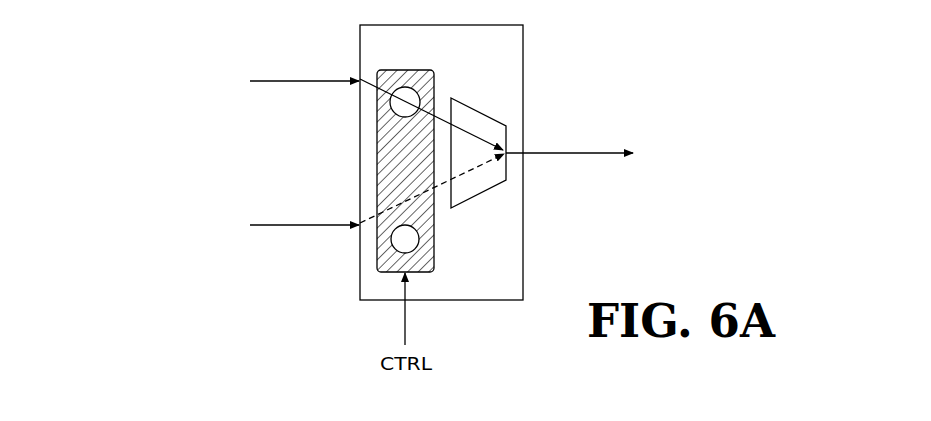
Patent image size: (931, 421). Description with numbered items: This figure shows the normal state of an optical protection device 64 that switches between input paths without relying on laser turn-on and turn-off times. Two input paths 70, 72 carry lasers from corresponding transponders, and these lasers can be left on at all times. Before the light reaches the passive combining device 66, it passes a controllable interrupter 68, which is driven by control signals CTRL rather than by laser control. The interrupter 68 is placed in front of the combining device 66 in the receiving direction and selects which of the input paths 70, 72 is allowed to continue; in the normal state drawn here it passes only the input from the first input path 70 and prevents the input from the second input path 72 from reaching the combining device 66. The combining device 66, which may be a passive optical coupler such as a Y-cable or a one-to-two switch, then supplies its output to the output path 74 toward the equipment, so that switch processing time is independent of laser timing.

The optical protection device 64 is at (495, 300).
The combining device 66 is at (487, 113).
The controllable interrupter 68 is at (395, 70).
The input path 70 is at (300, 83).
The input path 72 is at (301, 228).
The output path 74 is at (580, 153).